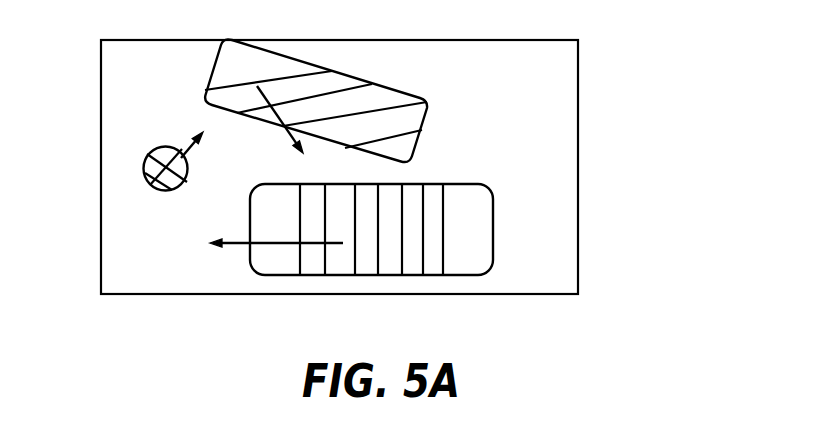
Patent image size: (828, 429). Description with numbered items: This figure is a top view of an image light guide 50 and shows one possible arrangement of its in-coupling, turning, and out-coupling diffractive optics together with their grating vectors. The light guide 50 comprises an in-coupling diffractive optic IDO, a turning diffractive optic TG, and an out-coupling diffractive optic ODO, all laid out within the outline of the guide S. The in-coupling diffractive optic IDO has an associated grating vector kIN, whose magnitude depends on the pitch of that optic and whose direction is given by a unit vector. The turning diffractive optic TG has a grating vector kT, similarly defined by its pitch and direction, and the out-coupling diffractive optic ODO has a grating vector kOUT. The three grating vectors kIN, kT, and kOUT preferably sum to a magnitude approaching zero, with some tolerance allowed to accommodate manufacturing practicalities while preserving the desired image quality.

The image light guide 50 is at (712, 310).
The substrate S is at (339, 167).
The transmission grating TG is at (292, 100).
The in-coupling diffractive optic IDO is at (138, 160).
The out-coupling diffractive optic ODO is at (457, 263).
The grating vector of the in-coupling diffractive optic kIN is at (183, 134).
The grating vector of the turning diffractive optic kT is at (280, 126).
The grating vector of the out-coupling diffractive optic kOUT is at (265, 260).